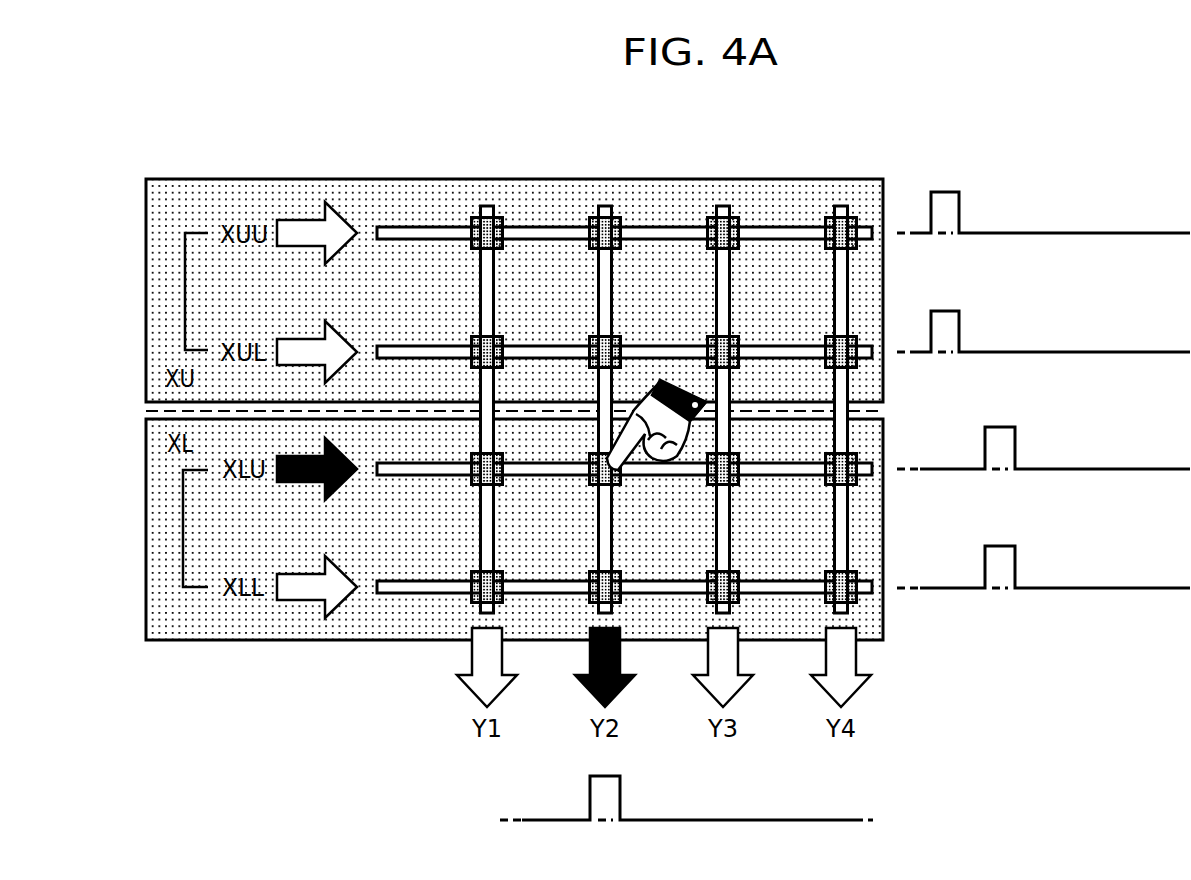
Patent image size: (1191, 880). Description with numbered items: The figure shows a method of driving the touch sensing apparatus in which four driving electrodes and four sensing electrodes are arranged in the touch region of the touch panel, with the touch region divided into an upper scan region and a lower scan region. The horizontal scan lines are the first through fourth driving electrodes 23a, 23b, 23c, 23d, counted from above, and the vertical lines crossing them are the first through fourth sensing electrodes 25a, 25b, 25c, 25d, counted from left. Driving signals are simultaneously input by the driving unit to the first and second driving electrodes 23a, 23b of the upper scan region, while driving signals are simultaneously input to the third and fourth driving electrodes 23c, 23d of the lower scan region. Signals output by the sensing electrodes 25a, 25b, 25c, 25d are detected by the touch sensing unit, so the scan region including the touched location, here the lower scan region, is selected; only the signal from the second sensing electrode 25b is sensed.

The first driving electrode 23a is at (390, 232).
The second driving electrode 23b is at (425, 350).
The third driving electrode 23c is at (411, 470).
The fourth driving electrode 23d is at (390, 590).
The first sensing electrode 25a is at (487, 205).
The second sensing electrode 25b is at (605, 205).
The third sensing electrode 25c is at (723, 205).
The fourth sensing electrode 25d is at (841, 205).